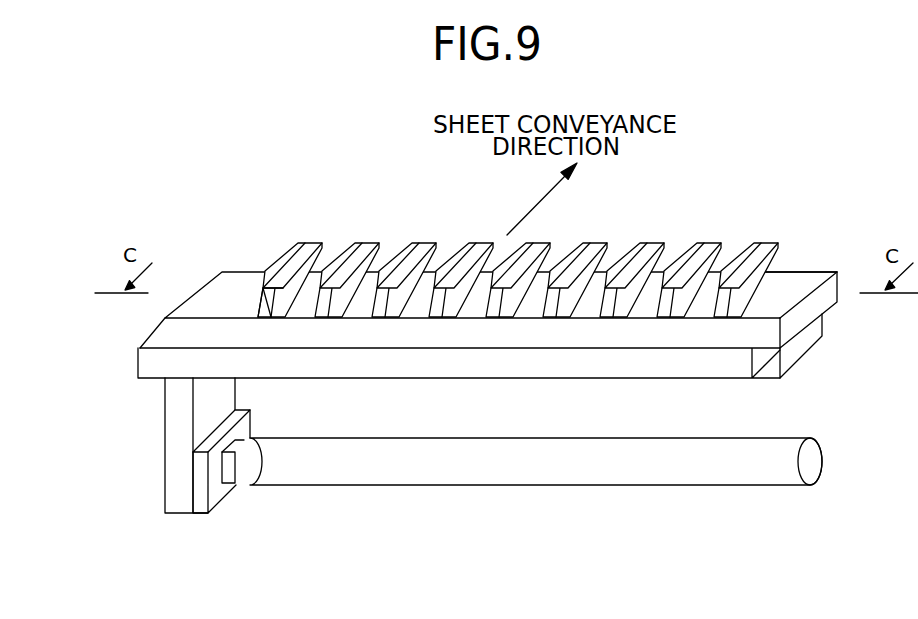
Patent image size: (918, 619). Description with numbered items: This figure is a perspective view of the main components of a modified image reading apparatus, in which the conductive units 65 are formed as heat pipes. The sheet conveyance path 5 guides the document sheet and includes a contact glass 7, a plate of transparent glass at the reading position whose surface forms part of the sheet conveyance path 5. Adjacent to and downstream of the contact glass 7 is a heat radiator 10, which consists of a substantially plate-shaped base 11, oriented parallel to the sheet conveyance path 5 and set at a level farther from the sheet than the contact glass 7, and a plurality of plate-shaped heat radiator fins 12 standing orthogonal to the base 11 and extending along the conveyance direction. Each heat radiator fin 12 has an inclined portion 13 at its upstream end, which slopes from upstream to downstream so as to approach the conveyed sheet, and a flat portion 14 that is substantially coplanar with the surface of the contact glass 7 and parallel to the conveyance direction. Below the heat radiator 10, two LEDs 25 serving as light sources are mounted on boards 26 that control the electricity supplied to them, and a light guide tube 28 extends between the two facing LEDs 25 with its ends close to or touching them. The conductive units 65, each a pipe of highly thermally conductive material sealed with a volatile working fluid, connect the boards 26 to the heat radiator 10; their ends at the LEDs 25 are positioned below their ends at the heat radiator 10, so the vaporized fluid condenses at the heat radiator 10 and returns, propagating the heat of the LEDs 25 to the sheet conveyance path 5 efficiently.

The sheet conveyance path 5 is at (472, 262).
The contact glass 7 is at (138, 366).
The heat radiator 10 is at (511, 249).
The base 11 is at (815, 272).
The heat radiator fin 12 is at (769, 243).
The inclined portion 13 is at (265, 288).
The flat portion 14 is at (312, 246).
The light emitting diode (LED) 25 is at (227, 474).
The board 26 is at (217, 505).
The light guide tube 28 is at (484, 487).
The conductive unit 65 is at (164, 447).